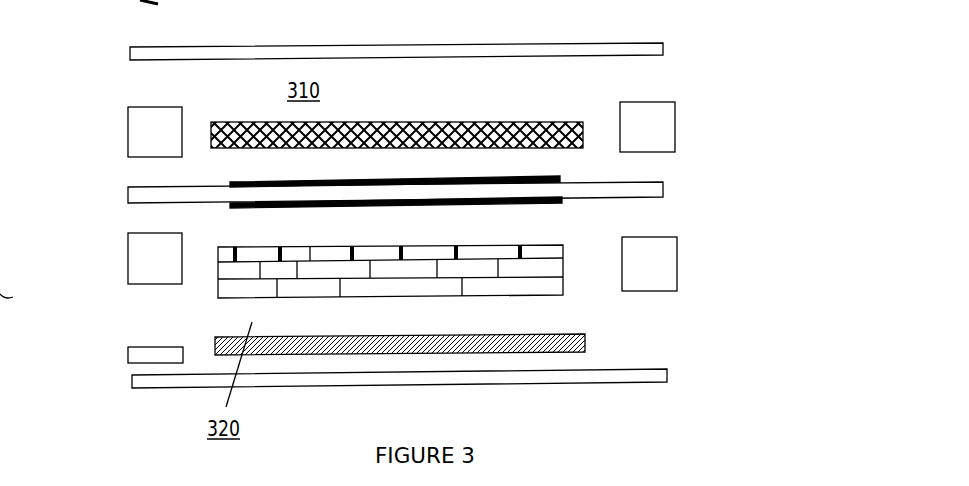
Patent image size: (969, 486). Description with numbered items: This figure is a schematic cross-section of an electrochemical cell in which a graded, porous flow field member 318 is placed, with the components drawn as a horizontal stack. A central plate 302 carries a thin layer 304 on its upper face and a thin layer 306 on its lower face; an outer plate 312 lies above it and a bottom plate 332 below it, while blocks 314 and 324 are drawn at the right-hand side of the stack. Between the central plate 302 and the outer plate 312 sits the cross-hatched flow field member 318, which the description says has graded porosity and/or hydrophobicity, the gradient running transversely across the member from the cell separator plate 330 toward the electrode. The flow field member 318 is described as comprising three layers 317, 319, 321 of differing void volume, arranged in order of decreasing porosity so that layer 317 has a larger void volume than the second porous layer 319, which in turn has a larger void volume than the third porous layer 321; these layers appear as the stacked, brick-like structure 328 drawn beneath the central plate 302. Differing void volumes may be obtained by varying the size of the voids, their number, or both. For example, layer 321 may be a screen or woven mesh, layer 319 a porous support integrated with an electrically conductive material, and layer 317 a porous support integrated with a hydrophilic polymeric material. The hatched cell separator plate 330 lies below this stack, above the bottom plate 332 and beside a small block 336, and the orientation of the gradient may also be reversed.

The substrate plate 302 is at (663, 190).
The upper conductive layer 304 is at (233, 184).
The lower conductive layer 306 is at (245, 208).
The top cover plate 312 is at (663, 47).
The spacer block 314 is at (675, 127).
The layer 317 is at (545, 252).
The graded porous flow field member 318 is at (452, 121).
The second porous layer 319 is at (533, 270).
The third porous layer 321 is at (527, 288).
The spacer block 324 is at (677, 264).
The layered brick structure 328 is at (414, 270).
The cell separator plate 330 is at (585, 351).
The bottom plate 332 is at (667, 376).
The small spacer block 336 is at (128, 357).